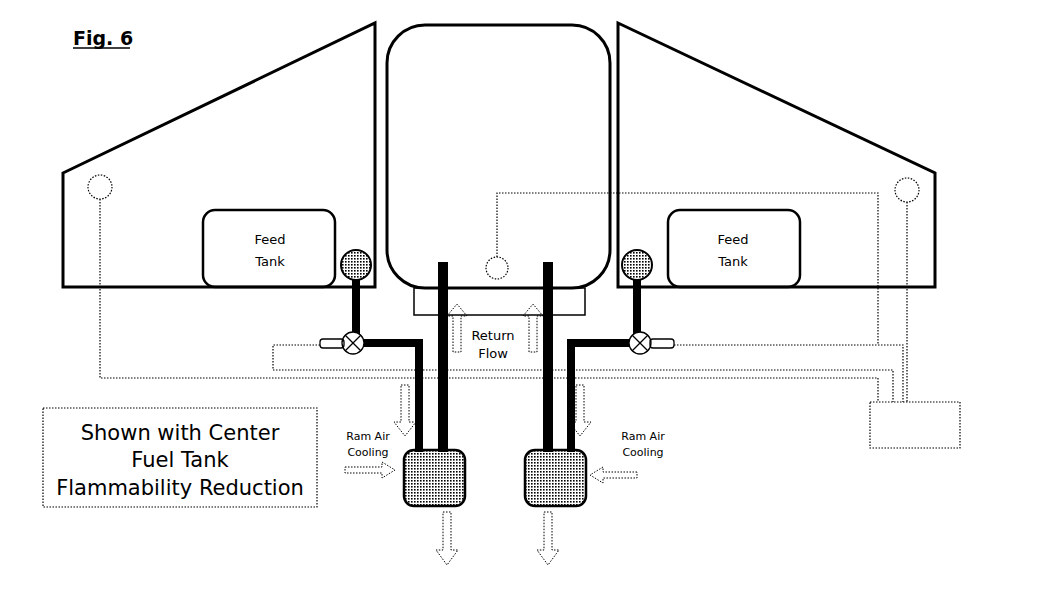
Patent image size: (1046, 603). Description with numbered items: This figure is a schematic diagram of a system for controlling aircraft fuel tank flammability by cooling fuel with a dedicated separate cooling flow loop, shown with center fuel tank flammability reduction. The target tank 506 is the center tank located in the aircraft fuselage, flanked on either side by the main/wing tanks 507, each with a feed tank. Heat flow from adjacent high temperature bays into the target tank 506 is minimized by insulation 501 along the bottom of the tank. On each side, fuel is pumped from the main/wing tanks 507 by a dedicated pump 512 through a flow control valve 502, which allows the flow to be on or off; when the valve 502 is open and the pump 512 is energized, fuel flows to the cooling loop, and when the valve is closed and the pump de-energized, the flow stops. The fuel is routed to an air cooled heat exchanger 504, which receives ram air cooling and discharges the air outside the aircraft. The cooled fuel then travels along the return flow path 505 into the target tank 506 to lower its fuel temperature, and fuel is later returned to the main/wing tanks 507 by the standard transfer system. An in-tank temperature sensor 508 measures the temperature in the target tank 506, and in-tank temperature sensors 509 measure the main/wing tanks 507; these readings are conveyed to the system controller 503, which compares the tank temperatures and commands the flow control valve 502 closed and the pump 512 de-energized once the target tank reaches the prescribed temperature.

The insulation 501 is at (517, 301).
The flow control valve 502 is at (495, 328).
The system controller 503 is at (616, 408).
The air cooled heat exchanger 504 is at (496, 483).
The return flow path 505 is at (496, 357).
The target tank 506 is at (498, 156).
The main/wing tanks 507 is at (499, 155).
The in-tank temperature sensor 508 is at (682, 269).
The in-tank temperature sensors 509 is at (503, 286).
The dedicated pump 512 is at (496, 249).